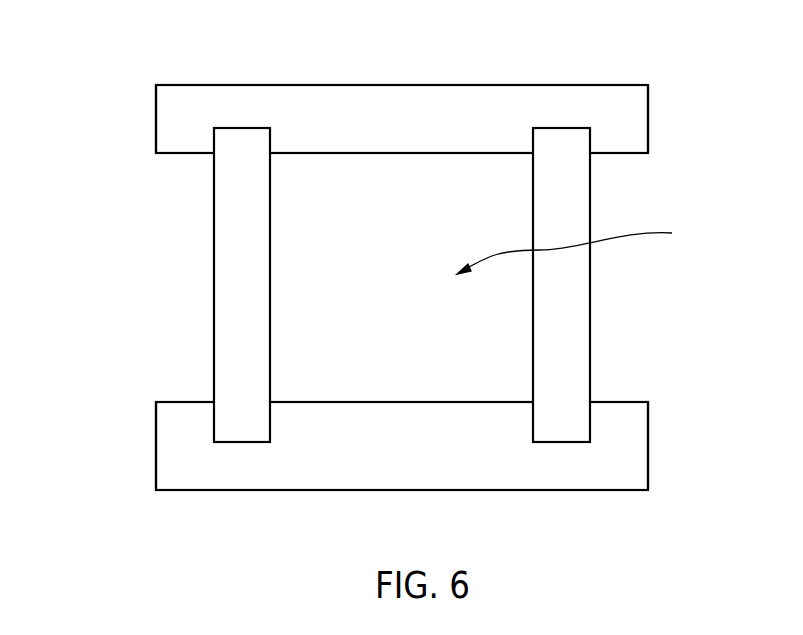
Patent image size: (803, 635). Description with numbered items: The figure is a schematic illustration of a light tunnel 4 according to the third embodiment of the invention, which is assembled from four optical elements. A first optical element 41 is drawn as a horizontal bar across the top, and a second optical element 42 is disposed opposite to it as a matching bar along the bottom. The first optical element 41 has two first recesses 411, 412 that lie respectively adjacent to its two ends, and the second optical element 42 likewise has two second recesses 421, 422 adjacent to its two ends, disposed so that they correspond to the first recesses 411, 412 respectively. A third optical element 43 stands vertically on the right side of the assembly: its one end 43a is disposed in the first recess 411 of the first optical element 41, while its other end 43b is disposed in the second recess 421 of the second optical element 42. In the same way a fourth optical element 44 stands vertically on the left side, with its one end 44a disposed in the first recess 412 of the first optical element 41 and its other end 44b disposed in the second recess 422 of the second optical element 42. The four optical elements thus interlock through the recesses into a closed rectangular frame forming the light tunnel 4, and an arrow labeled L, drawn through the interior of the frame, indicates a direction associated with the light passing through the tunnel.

The light tunnel 4 is at (55, 40).
The first optical element 41 is at (435, 110).
The first recess 411 is at (573, 127).
The first recess 412 is at (233, 127).
The second optical element 42 is at (463, 468).
The second recess 421 is at (563, 441).
The second recess 422 is at (240, 443).
The third optical element 43 is at (567, 280).
The end of third optical element 43a is at (567, 139).
The other end of third optical element 43b is at (575, 428).
The fourth optical element 44 is at (237, 280).
The end of fourth optical element 44a is at (242, 144).
The other end of fourth optical element 44b is at (238, 422).
The light emitting direction L is at (572, 247).